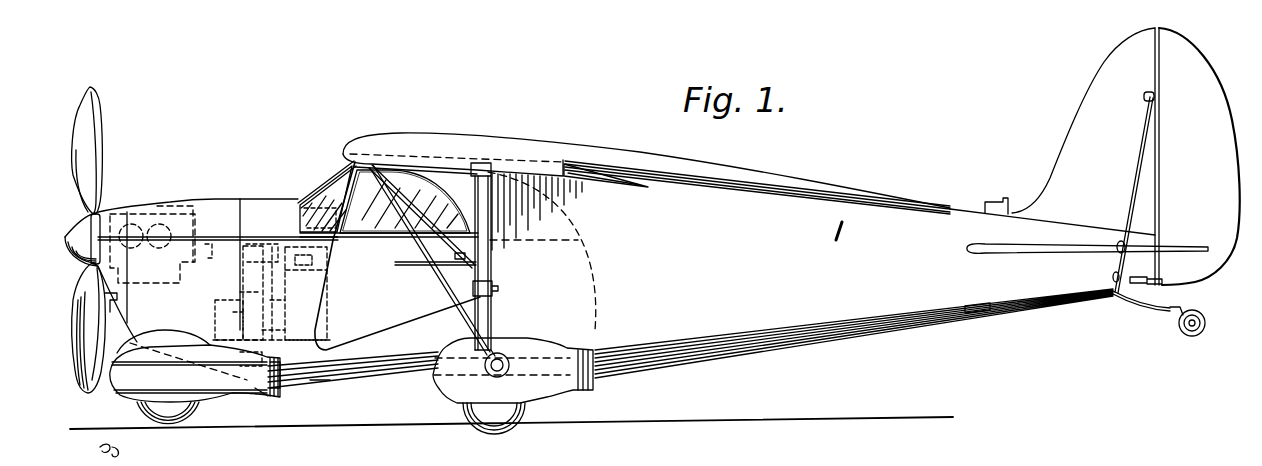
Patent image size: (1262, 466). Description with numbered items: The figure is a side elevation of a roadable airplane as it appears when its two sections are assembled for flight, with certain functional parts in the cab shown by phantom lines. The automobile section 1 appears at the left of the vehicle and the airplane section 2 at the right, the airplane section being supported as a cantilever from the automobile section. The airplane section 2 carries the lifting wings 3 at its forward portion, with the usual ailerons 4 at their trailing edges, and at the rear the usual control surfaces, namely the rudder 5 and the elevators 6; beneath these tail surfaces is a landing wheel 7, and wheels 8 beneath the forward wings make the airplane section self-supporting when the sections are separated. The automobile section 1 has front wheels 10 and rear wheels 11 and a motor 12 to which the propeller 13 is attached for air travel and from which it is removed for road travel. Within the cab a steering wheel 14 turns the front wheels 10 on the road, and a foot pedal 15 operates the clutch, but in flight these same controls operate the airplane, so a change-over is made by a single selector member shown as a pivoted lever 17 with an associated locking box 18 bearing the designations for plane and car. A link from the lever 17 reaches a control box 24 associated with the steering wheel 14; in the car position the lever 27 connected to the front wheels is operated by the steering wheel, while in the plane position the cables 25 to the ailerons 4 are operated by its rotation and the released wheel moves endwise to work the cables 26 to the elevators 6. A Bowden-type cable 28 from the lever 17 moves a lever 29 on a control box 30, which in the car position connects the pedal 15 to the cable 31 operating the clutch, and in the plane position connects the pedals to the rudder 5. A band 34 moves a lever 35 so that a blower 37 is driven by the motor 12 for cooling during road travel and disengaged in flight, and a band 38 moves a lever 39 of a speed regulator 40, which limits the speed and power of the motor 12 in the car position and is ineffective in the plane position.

The automobile section 1 is at (225, 196).
The airplane section 2 is at (857, 185).
The lifting wings 3 is at (415, 134).
The ailerons 4 is at (598, 170).
The rudder 5 is at (1203, 68).
The elevators 6 is at (1176, 247).
The landing wheel 7 is at (1184, 330).
The wheels 8 is at (505, 356).
The front wheels 10 is at (160, 413).
The rear wheels 11 is at (470, 408).
The motor 12 is at (144, 218).
The propeller 13 is at (97, 177).
The steering wheel 14 is at (330, 270).
The foot pedal 15 is at (250, 358).
The pivoted lever 17 is at (330, 186).
The locking box 18 is at (318, 207).
The control box 24 is at (306, 293).
The cables 25 is at (288, 312).
The cables 26 is at (245, 268).
The lever 27 is at (323, 278).
The cable 28 is at (272, 334).
The lever 29 is at (274, 388).
The control box 30 is at (258, 393).
The cable 31 is at (323, 383).
The band 34 is at (240, 292).
The lever 35 is at (230, 316).
The blower 37 is at (233, 305).
The band 38 is at (250, 243).
The lever 39 is at (209, 242).
The speed regulator 40 is at (263, 304).